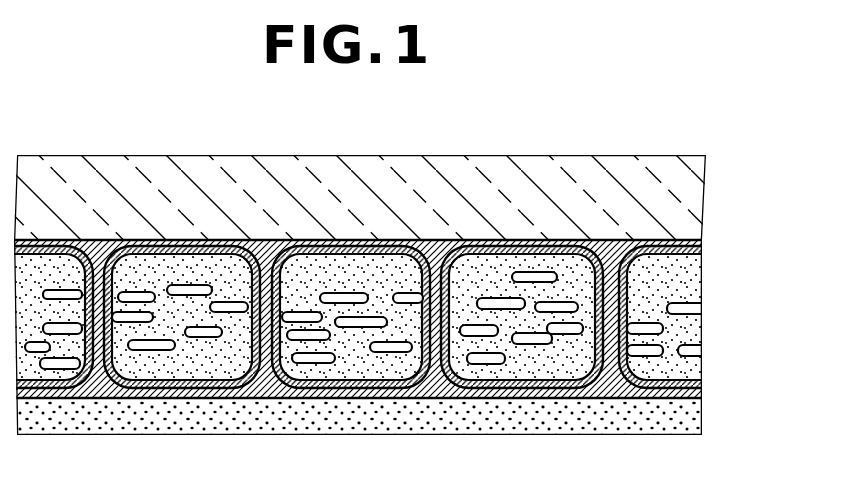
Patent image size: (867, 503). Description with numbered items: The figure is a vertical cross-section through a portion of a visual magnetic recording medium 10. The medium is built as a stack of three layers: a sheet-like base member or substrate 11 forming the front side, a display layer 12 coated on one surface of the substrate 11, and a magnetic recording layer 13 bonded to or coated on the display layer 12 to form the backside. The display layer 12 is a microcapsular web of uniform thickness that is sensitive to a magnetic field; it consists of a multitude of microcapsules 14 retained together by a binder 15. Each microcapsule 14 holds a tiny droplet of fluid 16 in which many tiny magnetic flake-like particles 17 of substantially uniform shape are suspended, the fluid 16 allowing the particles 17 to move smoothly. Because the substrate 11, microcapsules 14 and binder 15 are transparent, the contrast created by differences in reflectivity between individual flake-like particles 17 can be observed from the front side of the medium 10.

The visual magnetic recording medium 10 is at (412, 297).
The substrate 11 is at (683, 213).
The display layer 12 is at (380, 297).
The magnetic recording layer 13 is at (693, 423).
The microcapsule 14 is at (148, 268).
The binder 15 is at (441, 256).
The fluid 16 is at (517, 372).
The magnetic flake-like particles 17 is at (150, 352).